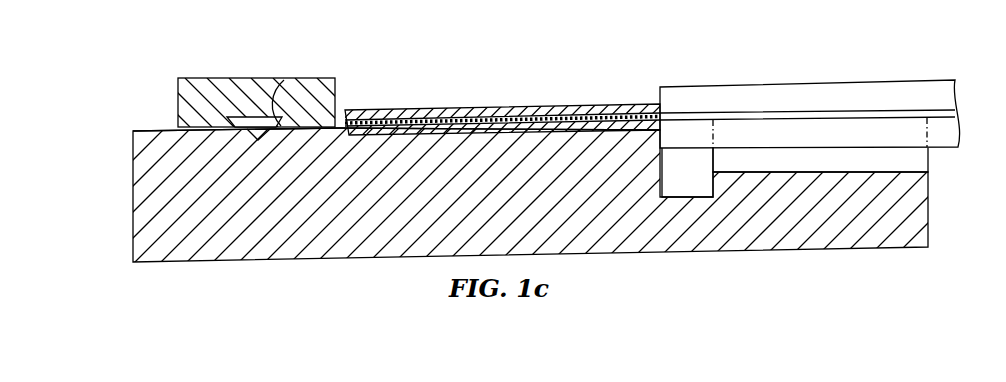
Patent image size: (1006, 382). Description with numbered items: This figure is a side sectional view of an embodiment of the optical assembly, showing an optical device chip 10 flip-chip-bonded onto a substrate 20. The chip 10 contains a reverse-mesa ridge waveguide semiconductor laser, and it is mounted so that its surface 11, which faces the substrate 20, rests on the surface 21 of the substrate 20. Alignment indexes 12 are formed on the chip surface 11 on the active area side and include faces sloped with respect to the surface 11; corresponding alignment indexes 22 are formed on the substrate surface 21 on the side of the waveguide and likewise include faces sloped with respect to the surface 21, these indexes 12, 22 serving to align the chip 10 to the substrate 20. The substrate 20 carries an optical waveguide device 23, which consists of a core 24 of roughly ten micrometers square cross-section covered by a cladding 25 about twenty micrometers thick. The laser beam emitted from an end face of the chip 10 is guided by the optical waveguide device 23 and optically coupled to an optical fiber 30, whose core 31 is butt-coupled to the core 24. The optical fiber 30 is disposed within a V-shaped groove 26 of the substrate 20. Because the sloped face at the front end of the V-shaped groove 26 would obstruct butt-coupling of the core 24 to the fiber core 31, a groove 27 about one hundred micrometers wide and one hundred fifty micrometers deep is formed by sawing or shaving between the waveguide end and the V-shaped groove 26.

The optical device chip 10 is at (220, 77).
The surface of the chip 11 is at (208, 132).
The alignment indexes 12 is at (284, 80).
The substrate 20 is at (135, 210).
The surface of the substrate 21 is at (160, 131).
The alignment indexes 22 is at (268, 131).
The optical waveguide device 23 is at (509, 81).
The core 24 is at (560, 62).
The cladding 25 is at (533, 125).
The V-shaped groove 26 is at (828, 160).
The groove 27 is at (695, 178).
The optical fiber 30 is at (785, 86).
The core of the fiber 31 is at (846, 112).